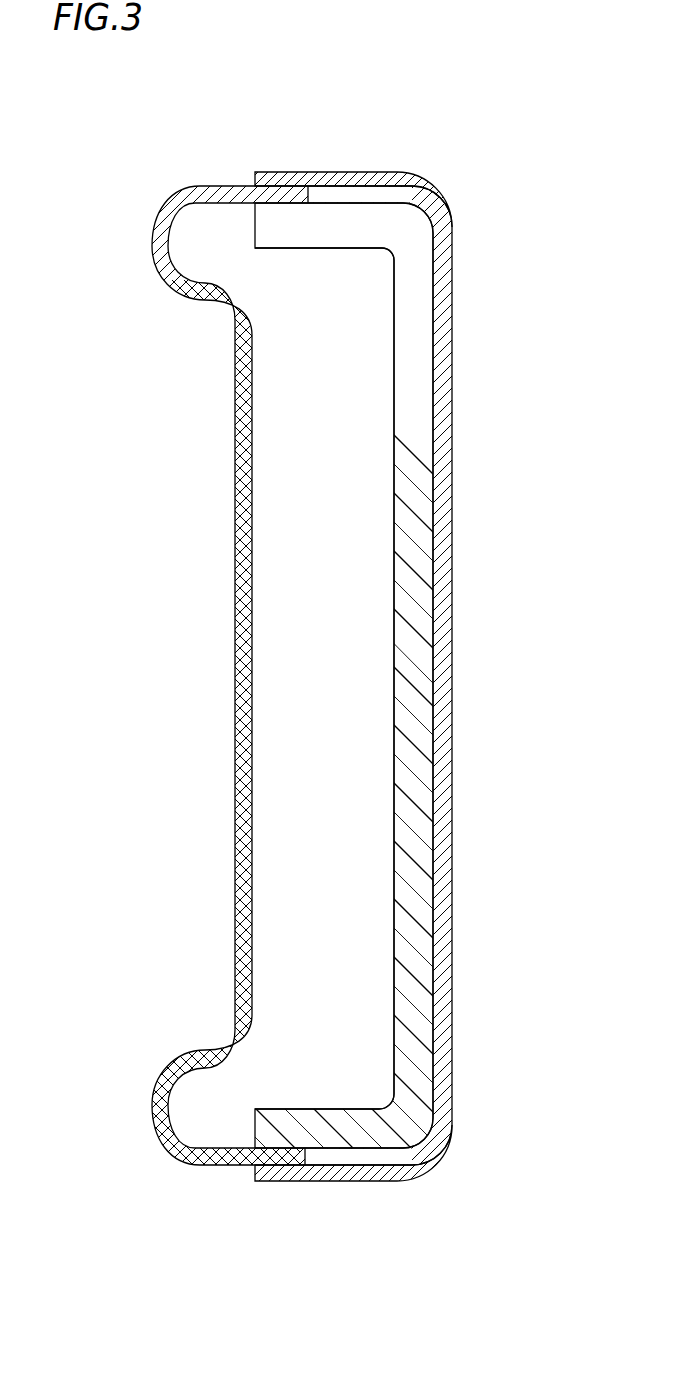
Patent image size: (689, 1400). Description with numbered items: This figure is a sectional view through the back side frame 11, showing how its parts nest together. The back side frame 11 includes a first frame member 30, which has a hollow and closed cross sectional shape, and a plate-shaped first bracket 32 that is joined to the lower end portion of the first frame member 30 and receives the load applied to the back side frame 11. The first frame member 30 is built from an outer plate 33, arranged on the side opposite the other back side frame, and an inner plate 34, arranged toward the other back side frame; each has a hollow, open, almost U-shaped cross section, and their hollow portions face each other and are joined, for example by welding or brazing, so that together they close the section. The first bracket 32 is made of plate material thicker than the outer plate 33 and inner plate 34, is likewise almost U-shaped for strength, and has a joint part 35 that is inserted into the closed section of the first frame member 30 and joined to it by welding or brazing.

The back side frame 11 is at (168, 194).
The first frame member 30 is at (314, 771).
The first bracket 32 is at (378, 544).
The outer plate 33 is at (213, 1167).
The inner plate 34 is at (353, 1209).
The joint part 35 is at (417, 742).